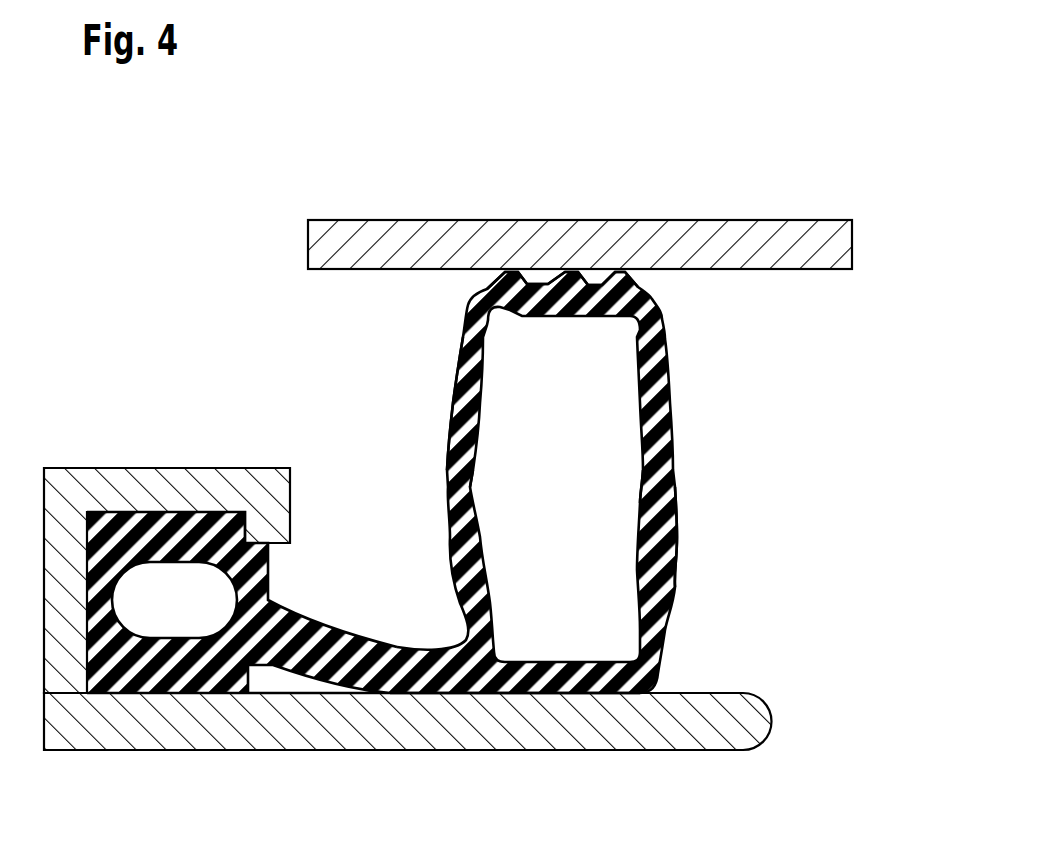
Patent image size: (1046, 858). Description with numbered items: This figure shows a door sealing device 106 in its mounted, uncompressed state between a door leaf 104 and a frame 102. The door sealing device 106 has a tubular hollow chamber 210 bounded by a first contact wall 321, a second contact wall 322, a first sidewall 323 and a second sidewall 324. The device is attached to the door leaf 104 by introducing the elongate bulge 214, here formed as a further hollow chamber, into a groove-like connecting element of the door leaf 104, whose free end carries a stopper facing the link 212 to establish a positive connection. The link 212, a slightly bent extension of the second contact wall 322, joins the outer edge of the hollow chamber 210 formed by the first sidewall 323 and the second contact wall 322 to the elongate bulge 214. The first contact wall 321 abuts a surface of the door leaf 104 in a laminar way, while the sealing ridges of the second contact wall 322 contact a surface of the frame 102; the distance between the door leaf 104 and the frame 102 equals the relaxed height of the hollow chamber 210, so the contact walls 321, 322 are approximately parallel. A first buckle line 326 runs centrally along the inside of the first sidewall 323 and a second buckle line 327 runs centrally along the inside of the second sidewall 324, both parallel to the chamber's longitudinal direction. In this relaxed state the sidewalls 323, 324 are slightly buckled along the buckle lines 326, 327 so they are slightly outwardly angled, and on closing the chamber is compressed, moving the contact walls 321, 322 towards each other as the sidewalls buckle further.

The frame 102 is at (832, 248).
The door leaf 104 is at (748, 729).
The door sealing device 106 is at (866, 404).
The tubular hollow chamber 210 is at (412, 333).
The link 212 is at (377, 616).
The elongate bulge 214 is at (112, 488).
The first contact wall 321 is at (566, 318).
The second contact wall 322 is at (560, 659).
The first sidewall 323 is at (488, 412).
The second sidewall 324 is at (640, 573).
The first buckle line 326 is at (482, 480).
The second buckle line 327 is at (648, 481).